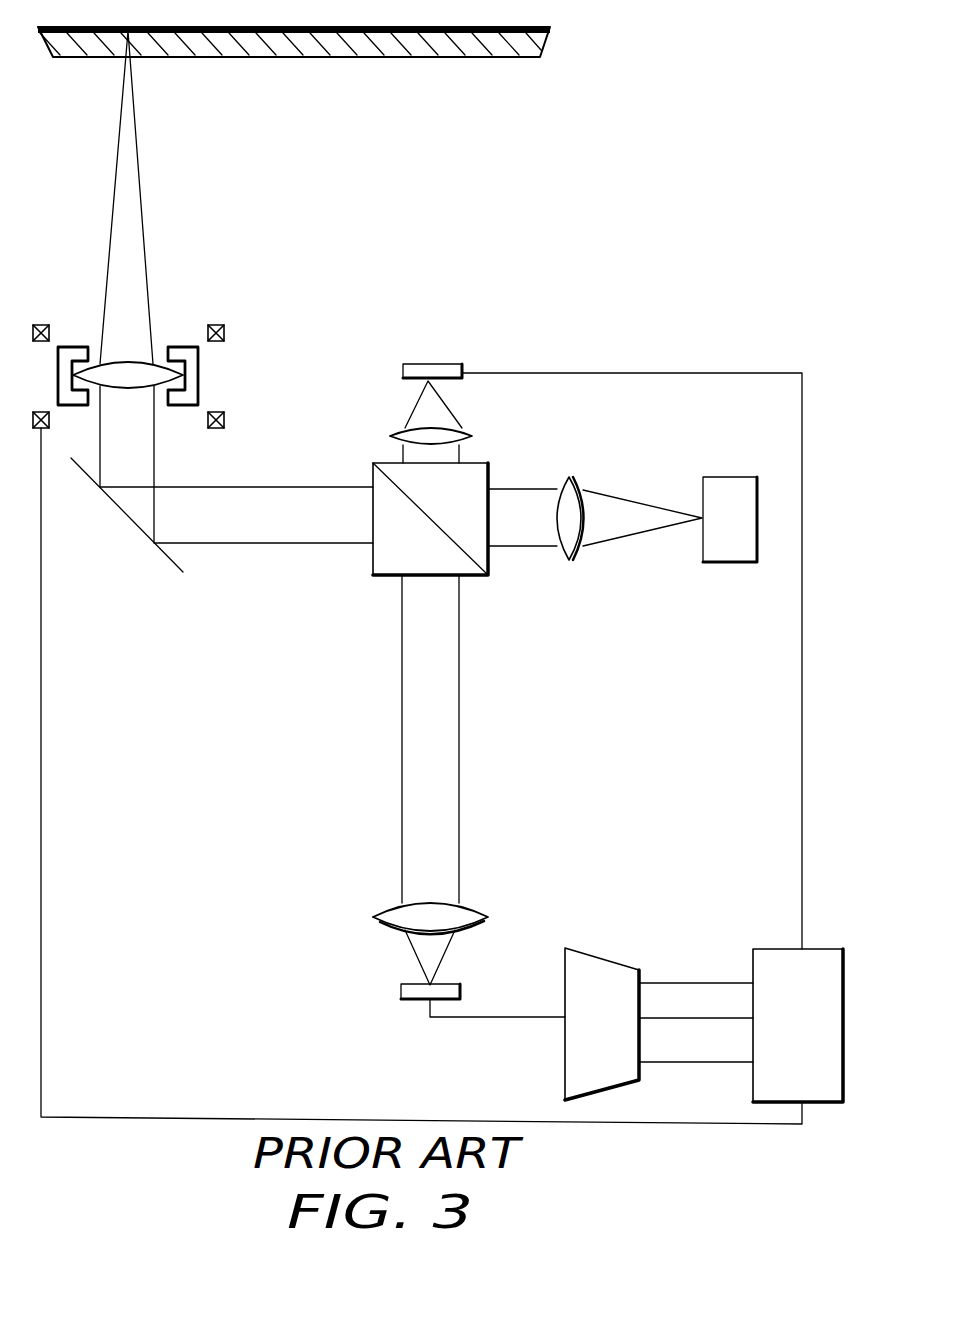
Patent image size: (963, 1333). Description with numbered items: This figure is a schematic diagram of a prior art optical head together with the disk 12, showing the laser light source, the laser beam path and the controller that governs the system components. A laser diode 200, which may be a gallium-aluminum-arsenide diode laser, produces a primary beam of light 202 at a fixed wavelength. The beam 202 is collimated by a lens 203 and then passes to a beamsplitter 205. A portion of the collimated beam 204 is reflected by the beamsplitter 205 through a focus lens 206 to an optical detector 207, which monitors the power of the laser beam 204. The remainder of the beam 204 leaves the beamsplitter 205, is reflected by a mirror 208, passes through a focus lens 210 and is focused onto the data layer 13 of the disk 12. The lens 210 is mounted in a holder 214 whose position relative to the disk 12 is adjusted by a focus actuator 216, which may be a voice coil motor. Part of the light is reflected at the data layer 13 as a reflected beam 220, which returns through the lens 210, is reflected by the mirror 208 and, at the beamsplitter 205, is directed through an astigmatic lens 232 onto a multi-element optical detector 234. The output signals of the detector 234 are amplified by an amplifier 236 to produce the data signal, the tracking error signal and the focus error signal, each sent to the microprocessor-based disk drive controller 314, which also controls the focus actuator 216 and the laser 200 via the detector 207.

The disk 12 is at (541, 57).
The data layer 13 is at (548, 27).
The laser diode 200 is at (731, 477).
The primary beam of light 202 is at (655, 520).
The lens 203 is at (570, 479).
The beam 204 is at (137, 230).
The beamsplitter 205 is at (372, 472).
The focus lens 206 is at (389, 436).
The optical detector 207 is at (420, 362).
The mirror 208 is at (130, 518).
The focus lens 210 is at (165, 388).
The holder 214 is at (178, 345).
The focus actuator 216 is at (226, 333).
The reflected beam 220 is at (401, 609).
The astigmatic lens 232 is at (489, 917).
The multi-element optical detector 234 is at (462, 993).
The amplifier 236 is at (605, 947).
The disk drive controller 314 is at (768, 948).